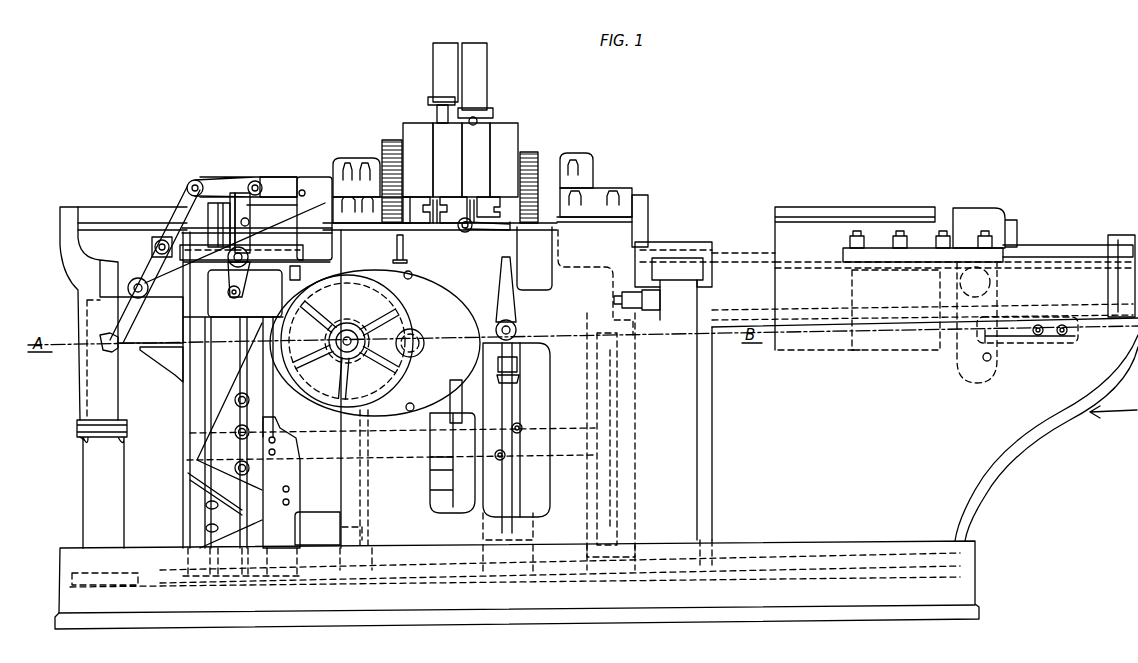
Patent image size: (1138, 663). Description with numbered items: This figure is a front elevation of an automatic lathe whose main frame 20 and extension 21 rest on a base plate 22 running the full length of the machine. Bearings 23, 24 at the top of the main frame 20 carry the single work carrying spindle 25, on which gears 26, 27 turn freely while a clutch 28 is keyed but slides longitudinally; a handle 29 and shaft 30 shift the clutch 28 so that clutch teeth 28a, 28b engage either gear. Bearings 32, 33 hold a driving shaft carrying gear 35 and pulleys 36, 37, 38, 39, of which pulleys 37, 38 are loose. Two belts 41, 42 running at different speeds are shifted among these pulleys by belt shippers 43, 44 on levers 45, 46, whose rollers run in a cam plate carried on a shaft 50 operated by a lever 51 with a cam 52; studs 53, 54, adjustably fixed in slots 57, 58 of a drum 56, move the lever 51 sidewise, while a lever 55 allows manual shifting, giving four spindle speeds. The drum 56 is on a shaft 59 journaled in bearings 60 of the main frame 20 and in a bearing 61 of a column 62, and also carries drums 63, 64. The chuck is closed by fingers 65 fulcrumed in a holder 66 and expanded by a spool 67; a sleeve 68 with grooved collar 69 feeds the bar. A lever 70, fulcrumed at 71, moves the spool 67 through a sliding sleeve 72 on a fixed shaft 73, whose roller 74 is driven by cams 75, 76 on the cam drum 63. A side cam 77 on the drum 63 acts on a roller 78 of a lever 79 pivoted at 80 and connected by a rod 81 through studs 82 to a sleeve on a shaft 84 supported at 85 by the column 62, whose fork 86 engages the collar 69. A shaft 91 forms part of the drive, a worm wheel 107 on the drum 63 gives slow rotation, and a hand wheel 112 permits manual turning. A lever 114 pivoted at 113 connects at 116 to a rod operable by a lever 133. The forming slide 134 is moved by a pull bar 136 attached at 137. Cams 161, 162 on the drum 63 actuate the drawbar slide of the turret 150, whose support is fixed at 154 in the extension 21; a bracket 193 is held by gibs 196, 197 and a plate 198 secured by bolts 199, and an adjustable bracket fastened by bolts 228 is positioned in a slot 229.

The main frame 20 is at (337, 510).
The extension to the main frame 21 is at (925, 397).
The base plate 22 is at (517, 584).
The bearing 23 is at (630, 193).
The bearing 24 is at (337, 195).
The work carrying spindle 25 is at (648, 210).
The gear 26 is at (625, 195).
The gear 27 is at (362, 172).
The clutch 28 is at (451, 210).
The clutch teeth 28a is at (497, 213).
The clutch teeth 28b is at (441, 196).
The handle 29 is at (502, 230).
The shaft 30 is at (463, 232).
The bearing 32 is at (592, 163).
The bearing 33 is at (387, 187).
The gear 35 is at (538, 155).
The pulley 36 is at (504, 160).
The pulley 37 is at (476, 160).
The pulley 38 is at (447, 160).
The pulley 39 is at (418, 160).
The belt 41 is at (445, 72).
The belt 42 is at (474, 76).
The belt shipper 43 is at (437, 102).
The belt shipper 44 is at (493, 110).
The lever 45 is at (437, 113).
The lever 46 is at (478, 120).
The shaft 50 is at (518, 328).
The lever 51 is at (518, 366).
The cam 52 is at (519, 379).
The stud 53 is at (500, 460).
The stud 54 is at (521, 432).
The lever 55 is at (503, 268).
The drum 56 is at (505, 514).
The slot 57 is at (502, 514).
The slot 58 is at (520, 513).
The shaft 59 is at (308, 463).
The bearing 60 is at (337, 512).
The bearing 61 is at (82, 462).
The column 62 is at (102, 484).
The cam drum 63 is at (225, 361).
The drum 64 is at (635, 395).
The fingers 65 is at (280, 177).
The holder 66 is at (257, 218).
The spool 67 is at (250, 223).
The sleeve 68 is at (233, 193).
The grooved collar 69 is at (204, 185).
The lever 70 is at (238, 272).
The fulcrum 71 is at (220, 274).
The sliding sleeve 72 is at (245, 293).
The fixed shaft 73 is at (298, 273).
The roller 74 is at (274, 377).
The cam 75 is at (281, 480).
The cam 76 is at (280, 530).
The cam 77 is at (150, 339).
The roller 78 is at (108, 334).
The lever 79 is at (153, 247).
The pivot 80 is at (136, 278).
The rod 81 is at (252, 181).
The studs 82 is at (193, 181).
The shaft 84 is at (132, 219).
The support 85 is at (70, 207).
The fork 86 is at (222, 203).
The shaft 91 is at (427, 330).
The worm wheel 107 is at (343, 533).
The hand wheel 112 is at (402, 300).
The pivot 113 is at (449, 484).
The lever 114 is at (462, 466).
The connection 116 is at (463, 400).
The lever 133 is at (454, 380).
The forming slide 134 is at (690, 243).
The pull bar 136 is at (656, 320).
The attachment point 137 is at (638, 300).
The turret 150 is at (855, 278).
The support 154 is at (1125, 229).
The cam 161 is at (229, 406).
The cam 162 is at (225, 510).
The bracket 193 is at (985, 228).
The adjustable gib 196 is at (850, 340).
The adjustable gib 197 is at (908, 317).
The plate 198 is at (917, 255).
The bolts 199 is at (983, 236).
The bolts 228 is at (1062, 336).
The slot 229 is at (1030, 343).